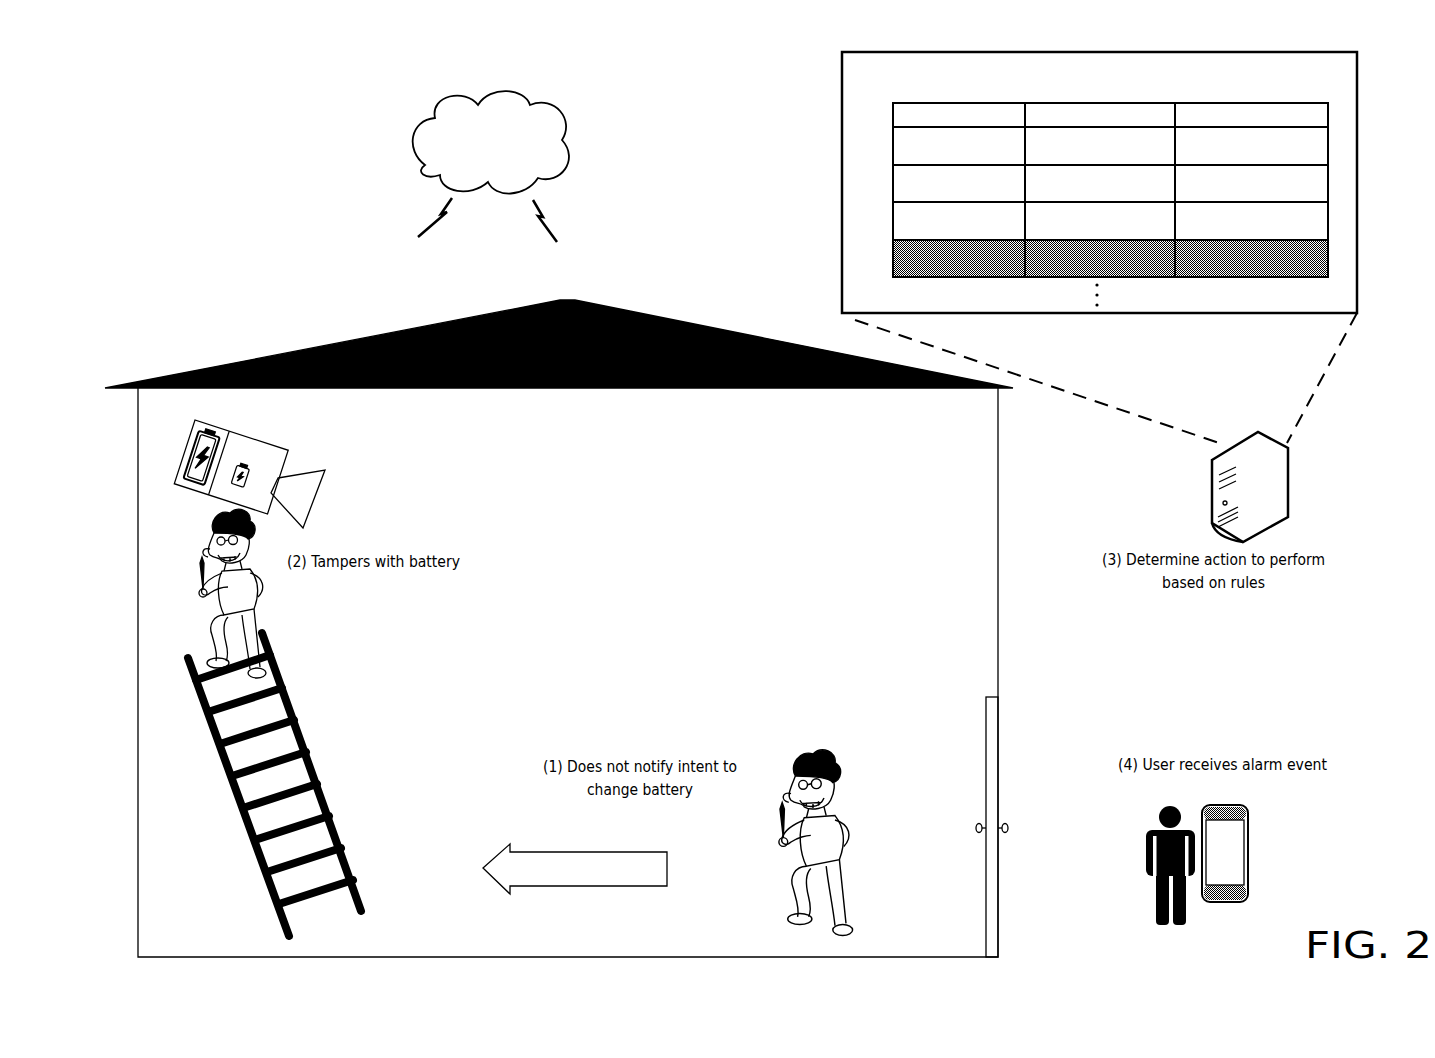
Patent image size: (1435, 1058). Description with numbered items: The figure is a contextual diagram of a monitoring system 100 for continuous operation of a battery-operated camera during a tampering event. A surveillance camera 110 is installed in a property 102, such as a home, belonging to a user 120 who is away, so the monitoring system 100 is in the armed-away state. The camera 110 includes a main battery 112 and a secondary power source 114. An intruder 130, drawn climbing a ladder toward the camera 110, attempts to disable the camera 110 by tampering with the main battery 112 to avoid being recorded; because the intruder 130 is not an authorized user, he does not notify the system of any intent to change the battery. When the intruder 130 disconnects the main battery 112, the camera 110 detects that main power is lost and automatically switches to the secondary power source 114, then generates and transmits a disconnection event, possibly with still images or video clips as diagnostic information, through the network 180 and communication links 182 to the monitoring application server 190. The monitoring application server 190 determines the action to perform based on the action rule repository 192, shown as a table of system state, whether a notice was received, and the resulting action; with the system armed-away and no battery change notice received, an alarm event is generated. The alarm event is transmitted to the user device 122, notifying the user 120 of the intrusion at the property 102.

The monitoring system 100 is at (238, 190).
The property 102 is at (590, 303).
The surveillance camera 110 is at (288, 461).
The main battery 112 is at (211, 431).
The secondary power source 114 is at (244, 462).
The user 120 is at (1160, 830).
The user device 122 is at (1250, 836).
The intruder 130 is at (215, 482).
The network 180 is at (433, 140).
The communication links 182 is at (440, 215).
The monitoring application server 190 is at (1106, 427).
The action rule repository 192 is at (840, 90).